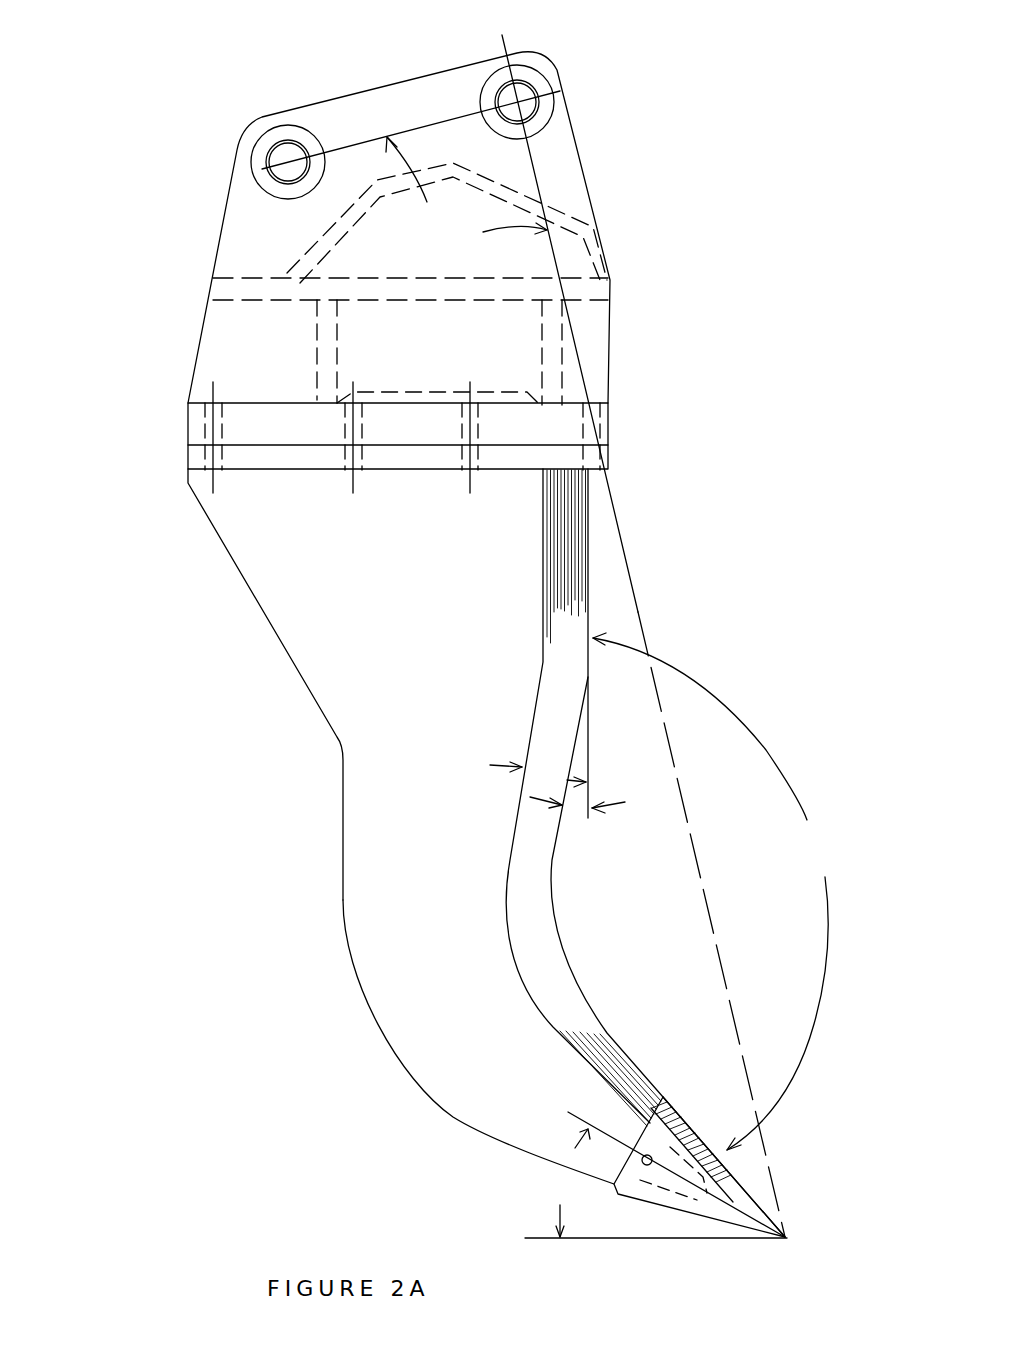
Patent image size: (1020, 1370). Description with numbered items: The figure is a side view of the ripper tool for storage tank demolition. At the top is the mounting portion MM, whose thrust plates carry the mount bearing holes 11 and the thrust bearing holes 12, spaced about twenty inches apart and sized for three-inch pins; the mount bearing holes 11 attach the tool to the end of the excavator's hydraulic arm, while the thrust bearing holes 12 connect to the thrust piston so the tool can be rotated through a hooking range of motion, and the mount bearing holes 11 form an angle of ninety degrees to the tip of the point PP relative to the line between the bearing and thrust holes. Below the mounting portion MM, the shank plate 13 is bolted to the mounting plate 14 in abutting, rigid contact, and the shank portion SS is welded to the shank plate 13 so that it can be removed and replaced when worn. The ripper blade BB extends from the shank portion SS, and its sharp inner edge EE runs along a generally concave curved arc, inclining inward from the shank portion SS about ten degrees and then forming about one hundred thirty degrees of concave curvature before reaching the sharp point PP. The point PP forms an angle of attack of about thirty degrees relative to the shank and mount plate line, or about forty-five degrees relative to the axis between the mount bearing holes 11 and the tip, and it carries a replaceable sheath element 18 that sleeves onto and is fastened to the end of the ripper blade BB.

The mount bearing holes 11 is at (545, 88).
The thrust bearing holes 12 is at (267, 143).
The shank plate 13 is at (183, 457).
The mounting plate 14 is at (195, 423).
The sheath element 18 is at (747, 1223).
The mounting portion MM is at (203, 327).
The shank portion SS is at (257, 618).
The ripper blade BB is at (405, 1070).
The sharp inner edge EE is at (588, 743).
The sharp point PP is at (742, 1180).